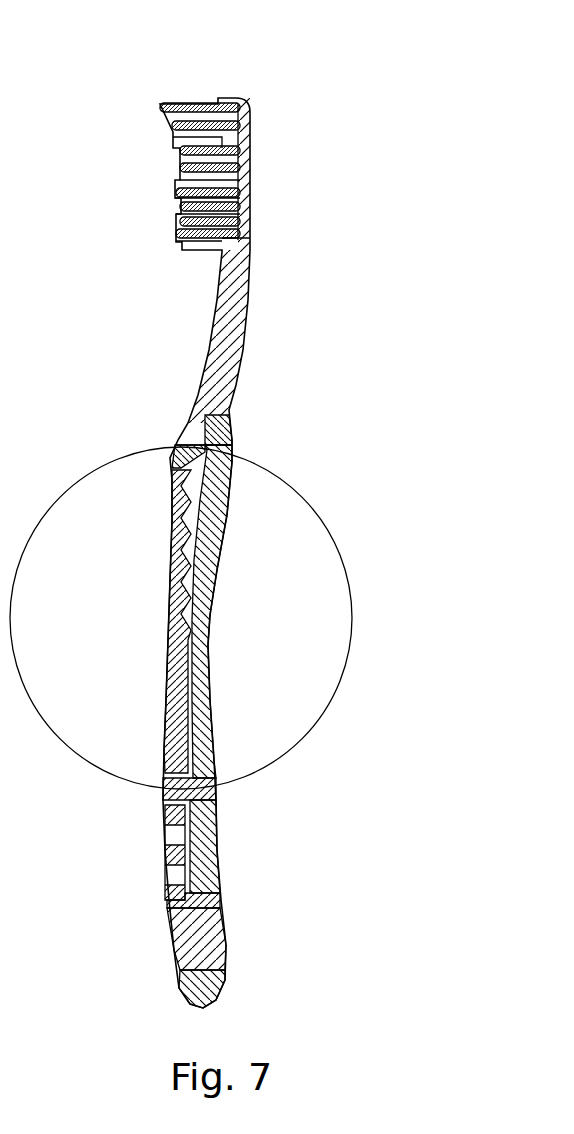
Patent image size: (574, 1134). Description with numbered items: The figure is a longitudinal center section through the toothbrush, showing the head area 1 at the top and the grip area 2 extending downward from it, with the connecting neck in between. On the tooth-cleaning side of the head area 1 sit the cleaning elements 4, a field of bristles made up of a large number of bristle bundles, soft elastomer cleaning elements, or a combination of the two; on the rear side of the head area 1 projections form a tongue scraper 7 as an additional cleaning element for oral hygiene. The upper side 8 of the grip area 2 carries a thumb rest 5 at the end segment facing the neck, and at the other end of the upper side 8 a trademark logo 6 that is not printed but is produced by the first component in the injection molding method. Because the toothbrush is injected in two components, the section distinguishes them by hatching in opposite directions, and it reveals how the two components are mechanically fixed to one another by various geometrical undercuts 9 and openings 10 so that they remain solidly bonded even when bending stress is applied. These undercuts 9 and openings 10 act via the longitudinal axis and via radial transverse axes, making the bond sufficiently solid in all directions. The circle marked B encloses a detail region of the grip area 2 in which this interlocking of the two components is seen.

The head area 1 is at (244, 100).
The grip area 2 is at (214, 650).
The cleaning elements 4 is at (188, 90).
The thumb rest 5 is at (170, 466).
The trademark logo 6 is at (186, 843).
The tongue scraper 7 is at (254, 172).
The upper side 8 is at (167, 604).
The undercuts 9 is at (196, 447).
The openings 10 is at (207, 428).
The detail region B is at (114, 774).